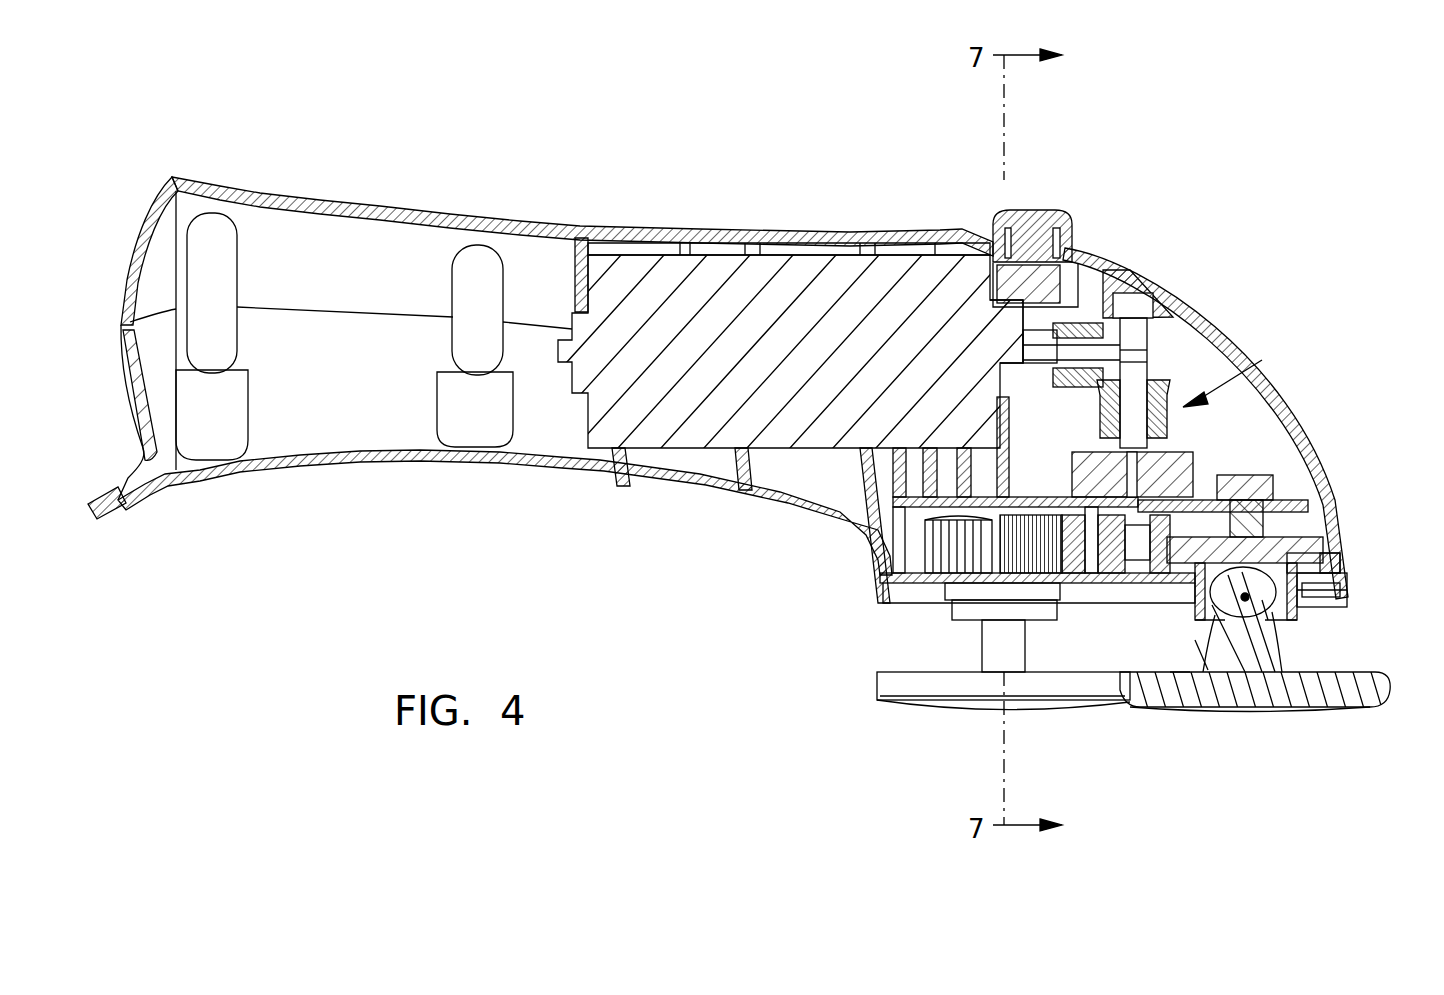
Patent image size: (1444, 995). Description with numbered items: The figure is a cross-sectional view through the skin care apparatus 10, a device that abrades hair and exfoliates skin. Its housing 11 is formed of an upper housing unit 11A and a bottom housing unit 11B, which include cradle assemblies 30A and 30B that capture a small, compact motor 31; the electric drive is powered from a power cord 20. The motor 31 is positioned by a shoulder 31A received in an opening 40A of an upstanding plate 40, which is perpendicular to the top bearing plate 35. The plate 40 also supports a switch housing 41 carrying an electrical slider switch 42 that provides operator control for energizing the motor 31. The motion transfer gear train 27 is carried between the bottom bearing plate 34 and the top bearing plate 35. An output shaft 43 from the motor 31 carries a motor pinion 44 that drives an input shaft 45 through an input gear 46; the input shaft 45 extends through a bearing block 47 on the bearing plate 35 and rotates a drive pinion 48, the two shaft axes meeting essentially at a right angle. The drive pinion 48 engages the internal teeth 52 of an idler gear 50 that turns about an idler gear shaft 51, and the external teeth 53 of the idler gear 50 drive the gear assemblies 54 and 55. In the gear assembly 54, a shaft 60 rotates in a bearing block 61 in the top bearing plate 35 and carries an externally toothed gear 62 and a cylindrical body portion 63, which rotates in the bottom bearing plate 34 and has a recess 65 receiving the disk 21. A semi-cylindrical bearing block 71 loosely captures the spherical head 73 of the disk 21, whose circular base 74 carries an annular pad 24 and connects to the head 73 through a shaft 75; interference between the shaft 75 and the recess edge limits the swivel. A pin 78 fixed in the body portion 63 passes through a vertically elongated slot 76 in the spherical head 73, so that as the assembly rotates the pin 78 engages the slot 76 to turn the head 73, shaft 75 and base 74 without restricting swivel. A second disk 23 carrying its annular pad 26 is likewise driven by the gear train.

The skin care apparatus 10 is at (484, 104).
The housing 11 is at (332, 182).
The upper housing unit 11A is at (390, 205).
The bottom housing unit 11B is at (387, 464).
The power cord 20 is at (113, 504).
The cradle assembly 30A is at (690, 238).
The cradle assembly 30B is at (730, 462).
The motor 31 is at (832, 308).
The shoulder 31A is at (988, 340).
The opening 40A is at (1010, 360).
The upstanding plate 40 is at (1007, 403).
The slider switch 42 is at (1032, 240).
The switch housing 41 is at (1085, 318).
The motor pinion 44 is at (1113, 300).
The output shaft 43 is at (1165, 340).
The input shaft 45 is at (1140, 356).
The input gear 46 is at (1155, 368).
The bearing block 47 is at (1205, 420).
The motion transfer gear train 27 is at (1305, 375).
The shaft 60 is at (1250, 475).
The top bearing plate 35 is at (1275, 490).
The bearing block 61 is at (1290, 500).
The gear assembly 54 is at (1330, 522).
The externally toothed gear 62 is at (1330, 545).
The bottom bearing plate 34 is at (1340, 572).
The bearing block 71 is at (1300, 592).
The cylindrical body portion 63 is at (1290, 608).
The spherical head 73 is at (1280, 632).
The disk 21 is at (1358, 672).
The circular base 74 is at (1345, 690).
The annular pad 24 is at (1325, 712).
The slot 76 is at (1272, 625).
The pin 78 is at (1240, 690).
The shaft 75 is at (1207, 680).
The recess 65 is at (1183, 690).
The drive pinion 48 is at (1150, 625).
The idler gear 50 is at (1110, 605).
The idler gear shaft 51 is at (1085, 585).
The annular pad 26 is at (987, 712).
The disk 23 is at (877, 690).
The internal teeth 52 is at (982, 600).
The gear assembly 55 is at (883, 580).
The external teeth 53 is at (947, 555).